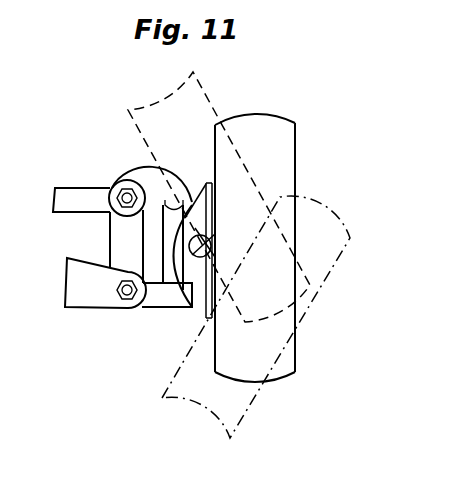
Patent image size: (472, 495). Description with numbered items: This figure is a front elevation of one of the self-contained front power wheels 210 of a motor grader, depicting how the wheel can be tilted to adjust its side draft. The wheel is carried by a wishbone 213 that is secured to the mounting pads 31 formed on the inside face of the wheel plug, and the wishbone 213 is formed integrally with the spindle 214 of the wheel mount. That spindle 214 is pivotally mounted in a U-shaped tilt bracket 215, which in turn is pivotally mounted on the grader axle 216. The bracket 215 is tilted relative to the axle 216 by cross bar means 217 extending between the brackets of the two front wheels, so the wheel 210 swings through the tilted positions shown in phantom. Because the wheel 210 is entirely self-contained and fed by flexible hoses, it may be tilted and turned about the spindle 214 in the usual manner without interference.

The front wheel 210 is at (279, 166).
The cross bar means 217 is at (75, 198).
The U-shaped tilt bracket 215 is at (121, 237).
The grader axle 216 is at (95, 300).
The spindle 214 is at (178, 297).
The wishbone 213 is at (213, 237).
The mounting pads 31 is at (213, 207).